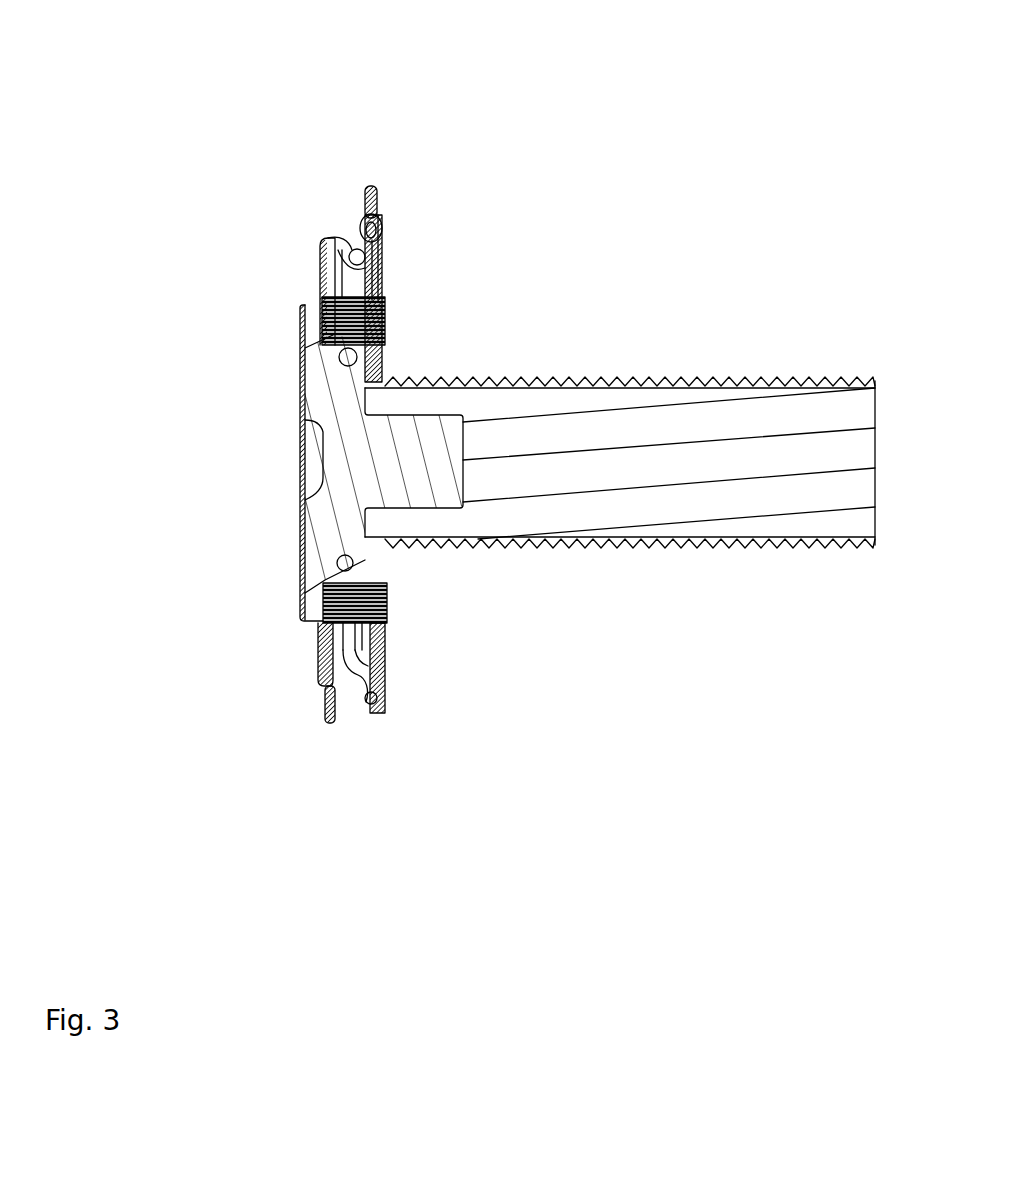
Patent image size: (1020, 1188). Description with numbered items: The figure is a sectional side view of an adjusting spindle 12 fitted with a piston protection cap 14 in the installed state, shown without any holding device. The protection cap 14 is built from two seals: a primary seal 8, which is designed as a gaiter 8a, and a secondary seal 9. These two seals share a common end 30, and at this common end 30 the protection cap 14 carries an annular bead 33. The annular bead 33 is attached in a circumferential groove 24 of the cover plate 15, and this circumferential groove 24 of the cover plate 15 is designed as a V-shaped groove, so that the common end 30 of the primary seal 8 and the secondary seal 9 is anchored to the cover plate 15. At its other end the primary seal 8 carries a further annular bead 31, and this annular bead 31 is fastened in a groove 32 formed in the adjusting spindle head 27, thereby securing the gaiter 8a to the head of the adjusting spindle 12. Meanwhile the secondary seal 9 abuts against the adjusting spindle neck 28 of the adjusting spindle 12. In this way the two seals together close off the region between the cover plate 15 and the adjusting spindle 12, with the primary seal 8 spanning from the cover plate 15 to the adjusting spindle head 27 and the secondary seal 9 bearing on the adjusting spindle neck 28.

The primary seal 8 is at (309, 464).
The gaiter 8a is at (314, 460).
The secondary seal 9 is at (386, 317).
The adjusting spindle 12 is at (620, 501).
The piston protection cap 14 is at (305, 275).
The cover plate 15 is at (368, 186).
The circumferential groove 24 is at (384, 268).
The adjusting spindle head 27 is at (302, 594).
The adjusting spindle neck 28 is at (767, 376).
The common end 30 is at (346, 192).
The annular bead 31 is at (334, 591).
The groove 32 is at (347, 563).
The annular bead 33 is at (352, 246).